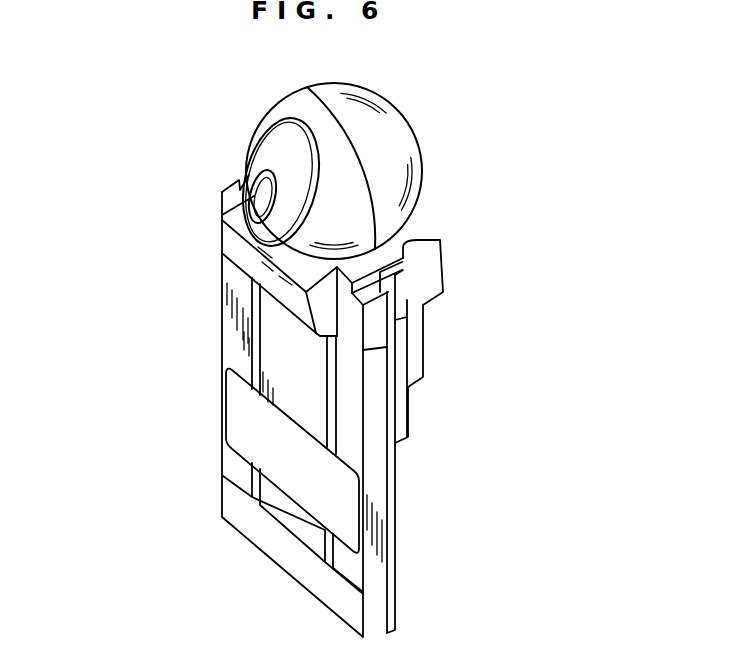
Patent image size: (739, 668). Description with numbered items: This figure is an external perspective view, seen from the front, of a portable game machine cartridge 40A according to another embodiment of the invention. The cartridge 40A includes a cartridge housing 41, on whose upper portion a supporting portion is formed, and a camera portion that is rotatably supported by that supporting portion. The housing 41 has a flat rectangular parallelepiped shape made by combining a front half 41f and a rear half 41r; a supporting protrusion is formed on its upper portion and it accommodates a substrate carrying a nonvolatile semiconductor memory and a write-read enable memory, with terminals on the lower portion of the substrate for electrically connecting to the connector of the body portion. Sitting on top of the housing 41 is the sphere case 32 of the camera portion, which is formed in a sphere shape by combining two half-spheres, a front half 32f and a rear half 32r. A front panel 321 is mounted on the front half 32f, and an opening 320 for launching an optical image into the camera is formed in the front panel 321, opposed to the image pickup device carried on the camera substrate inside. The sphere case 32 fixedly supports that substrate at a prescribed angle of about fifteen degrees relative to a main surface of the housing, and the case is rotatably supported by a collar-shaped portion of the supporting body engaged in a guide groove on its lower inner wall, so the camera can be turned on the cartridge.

The portable game machine cartridge 40A is at (173, 157).
The sphere case 32 is at (522, 55).
The front half 32f is at (293, 117).
The rear half 32r is at (395, 143).
The front panel 321 is at (267, 152).
The opening 320 is at (267, 207).
The cartridge housing 41 is at (550, 565).
The front half 41f is at (378, 620).
The rear half 41r is at (390, 572).